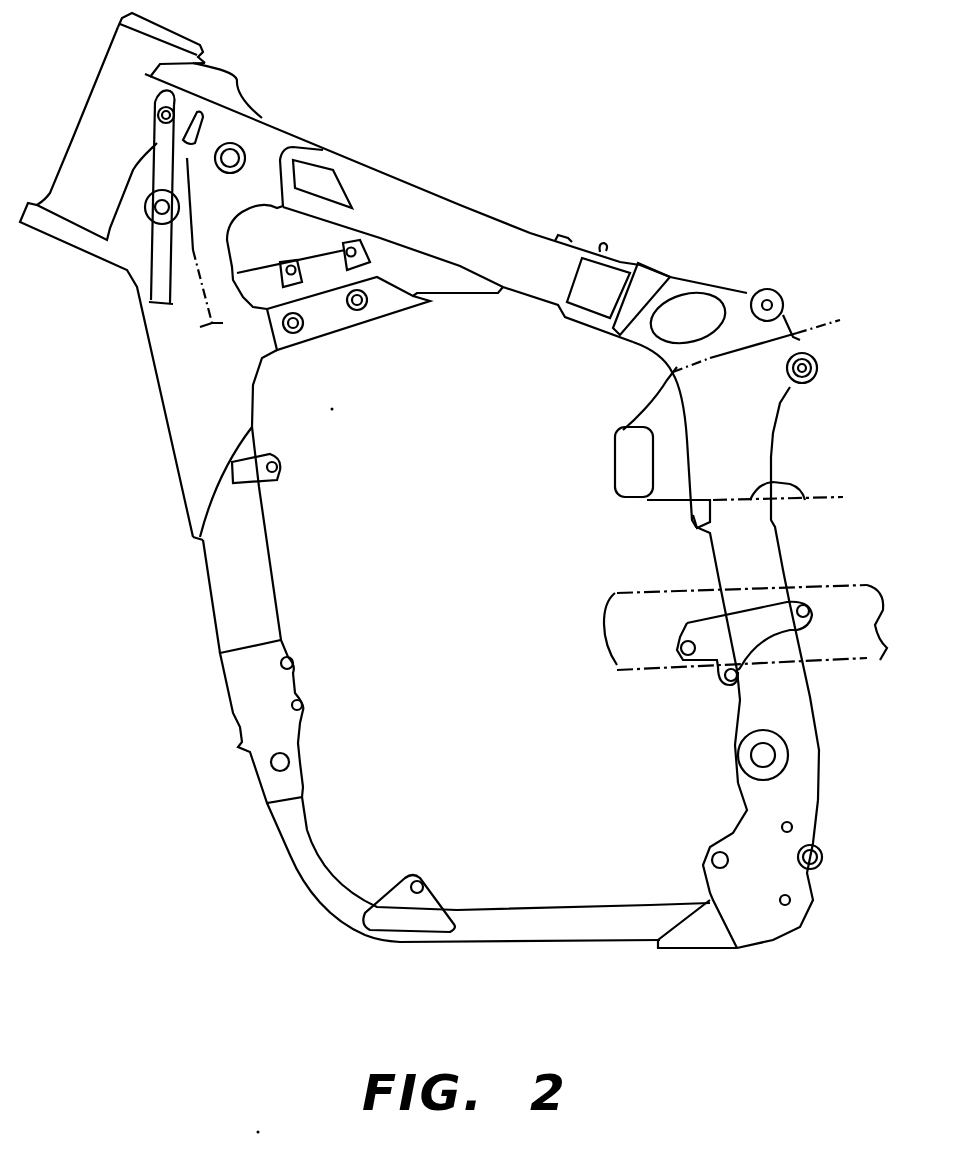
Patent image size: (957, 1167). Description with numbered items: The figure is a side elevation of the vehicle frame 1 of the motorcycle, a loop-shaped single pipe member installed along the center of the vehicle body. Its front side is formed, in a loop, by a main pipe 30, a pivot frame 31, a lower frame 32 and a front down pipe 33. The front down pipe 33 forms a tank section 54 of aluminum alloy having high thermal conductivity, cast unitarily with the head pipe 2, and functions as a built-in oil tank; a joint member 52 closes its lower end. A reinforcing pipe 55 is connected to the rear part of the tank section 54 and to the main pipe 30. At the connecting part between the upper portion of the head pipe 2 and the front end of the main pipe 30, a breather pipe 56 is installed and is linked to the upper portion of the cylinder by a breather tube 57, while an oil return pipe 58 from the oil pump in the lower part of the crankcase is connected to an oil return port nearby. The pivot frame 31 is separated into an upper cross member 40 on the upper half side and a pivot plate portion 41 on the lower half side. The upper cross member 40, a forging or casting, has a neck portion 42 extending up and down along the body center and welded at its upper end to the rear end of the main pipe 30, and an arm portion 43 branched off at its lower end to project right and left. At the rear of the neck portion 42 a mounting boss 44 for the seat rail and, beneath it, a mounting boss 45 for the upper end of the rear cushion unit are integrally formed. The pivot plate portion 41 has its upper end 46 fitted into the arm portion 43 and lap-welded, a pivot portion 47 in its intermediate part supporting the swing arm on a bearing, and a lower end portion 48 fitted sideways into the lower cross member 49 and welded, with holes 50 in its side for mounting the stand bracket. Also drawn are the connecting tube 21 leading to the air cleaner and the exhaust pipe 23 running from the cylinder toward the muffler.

The vehicle frame 1 is at (425, 145).
The head pipe 2 is at (97, 122).
The connecting tube 21 is at (643, 407).
The exhaust pipe 23 is at (613, 593).
The main pipe 30 is at (527, 235).
The pivot frame 31 is at (653, 557).
The lower frame 32 is at (535, 908).
The front down pipe 33 is at (273, 560).
The upper cross member 40 is at (790, 460).
The pivot plate portion 41 is at (781, 575).
The neck portion 42 is at (757, 407).
The arm portion 43 is at (803, 503).
The mounting boss 44 is at (781, 297).
The mounting boss 45 is at (808, 350).
The upper end 46 is at (687, 513).
The pivot portion 47 is at (763, 758).
The lower end portion 48 is at (752, 927).
The lower cross member 49 is at (687, 947).
The holes 50 is at (782, 827).
The joint member 52 is at (243, 690).
The tank section 54 is at (170, 387).
The reinforcing pipe 55 is at (333, 337).
The breather pipe 56 is at (200, 132).
The breather tube 57 is at (227, 232).
The oil return pipe 58 is at (132, 300).